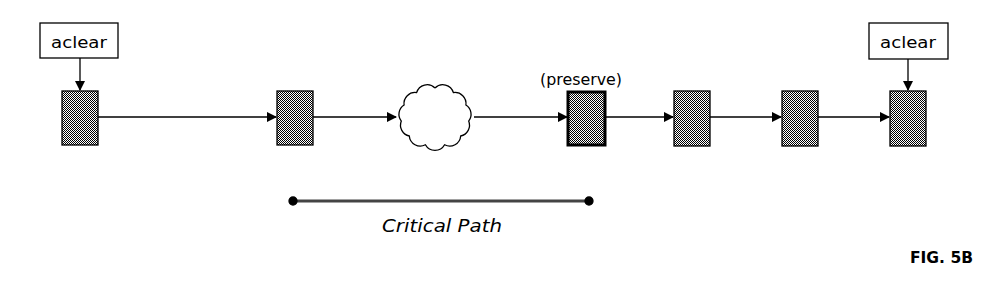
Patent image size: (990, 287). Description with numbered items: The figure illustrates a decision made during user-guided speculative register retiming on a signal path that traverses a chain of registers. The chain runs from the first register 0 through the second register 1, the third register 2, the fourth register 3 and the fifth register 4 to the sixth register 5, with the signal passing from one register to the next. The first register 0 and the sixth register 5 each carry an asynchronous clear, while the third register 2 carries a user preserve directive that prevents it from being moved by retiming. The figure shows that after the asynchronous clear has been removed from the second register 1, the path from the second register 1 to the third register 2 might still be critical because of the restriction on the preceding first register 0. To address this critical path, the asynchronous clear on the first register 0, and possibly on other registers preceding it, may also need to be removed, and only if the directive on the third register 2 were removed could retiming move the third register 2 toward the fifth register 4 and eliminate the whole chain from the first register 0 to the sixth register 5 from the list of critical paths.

The register r0 0 is at (80, 119).
The register r1 1 is at (295, 119).
The register r2 2 is at (586, 120).
The register r3 3 is at (692, 119).
The register r4 4 is at (800, 119).
The register r5 5 is at (908, 119).